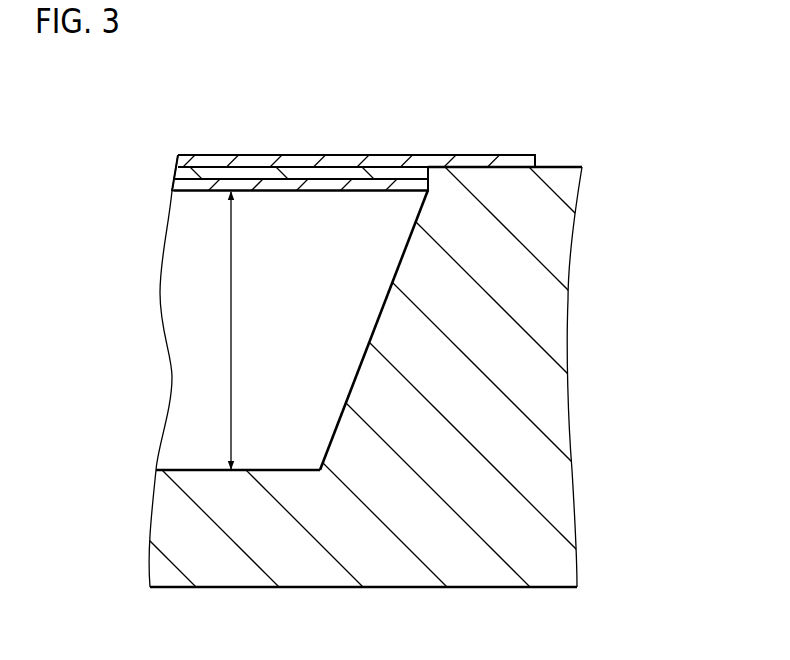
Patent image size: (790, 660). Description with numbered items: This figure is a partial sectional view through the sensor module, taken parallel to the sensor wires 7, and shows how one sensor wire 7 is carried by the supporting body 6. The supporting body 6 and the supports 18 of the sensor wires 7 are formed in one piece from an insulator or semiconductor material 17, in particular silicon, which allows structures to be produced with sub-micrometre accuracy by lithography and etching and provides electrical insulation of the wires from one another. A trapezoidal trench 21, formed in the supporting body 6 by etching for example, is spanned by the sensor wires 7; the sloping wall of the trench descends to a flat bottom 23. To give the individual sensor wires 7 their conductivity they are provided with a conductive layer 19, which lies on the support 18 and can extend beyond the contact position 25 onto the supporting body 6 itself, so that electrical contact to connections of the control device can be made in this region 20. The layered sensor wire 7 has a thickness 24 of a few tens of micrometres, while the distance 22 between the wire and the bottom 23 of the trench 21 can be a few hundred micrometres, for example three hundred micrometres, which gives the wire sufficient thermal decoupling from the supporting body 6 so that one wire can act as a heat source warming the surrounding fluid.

The supporting body 6 is at (395, 375).
The insulator or semiconductor material 17 is at (478, 295).
The sensor wire 7 is at (311, 138).
The support 18 is at (350, 168).
The conductive layer 19 is at (249, 167).
The region 20 is at (470, 150).
The trapezoidal trench 21 is at (319, 377).
The distance 22 is at (233, 293).
The bottom 23 is at (278, 468).
The thickness 24 is at (167, 155).
The contact position 25 is at (431, 151).